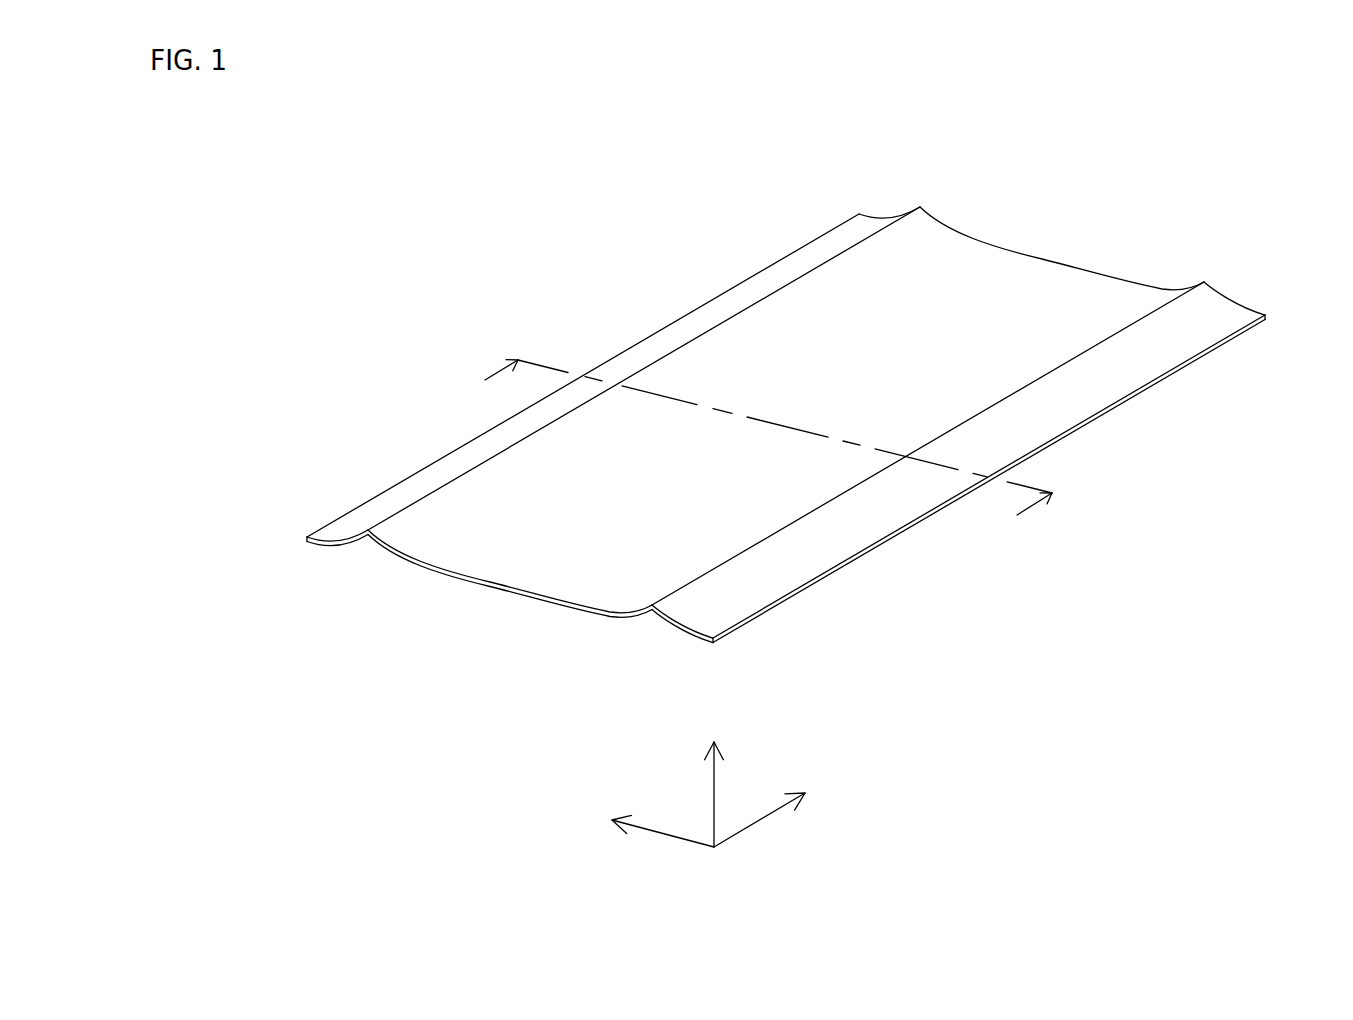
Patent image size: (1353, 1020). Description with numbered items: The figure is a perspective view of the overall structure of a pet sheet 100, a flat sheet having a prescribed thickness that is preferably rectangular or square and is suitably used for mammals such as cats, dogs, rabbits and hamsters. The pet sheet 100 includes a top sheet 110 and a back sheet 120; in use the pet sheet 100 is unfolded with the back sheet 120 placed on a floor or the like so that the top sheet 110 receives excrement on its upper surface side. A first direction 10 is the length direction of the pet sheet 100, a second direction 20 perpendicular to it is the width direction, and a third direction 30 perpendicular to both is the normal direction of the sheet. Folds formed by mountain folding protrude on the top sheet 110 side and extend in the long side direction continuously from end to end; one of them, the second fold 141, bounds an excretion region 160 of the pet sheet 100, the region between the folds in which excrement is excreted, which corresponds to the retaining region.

The pet sheet 100 is at (786, 400).
The top sheet 110 is at (848, 528).
The back sheet 120 is at (758, 622).
The second fold 141 is at (360, 550).
The excretion region 160 is at (523, 570).
The first direction 10 is at (759, 820).
The second direction 20 is at (663, 837).
The third direction 30 is at (700, 794).